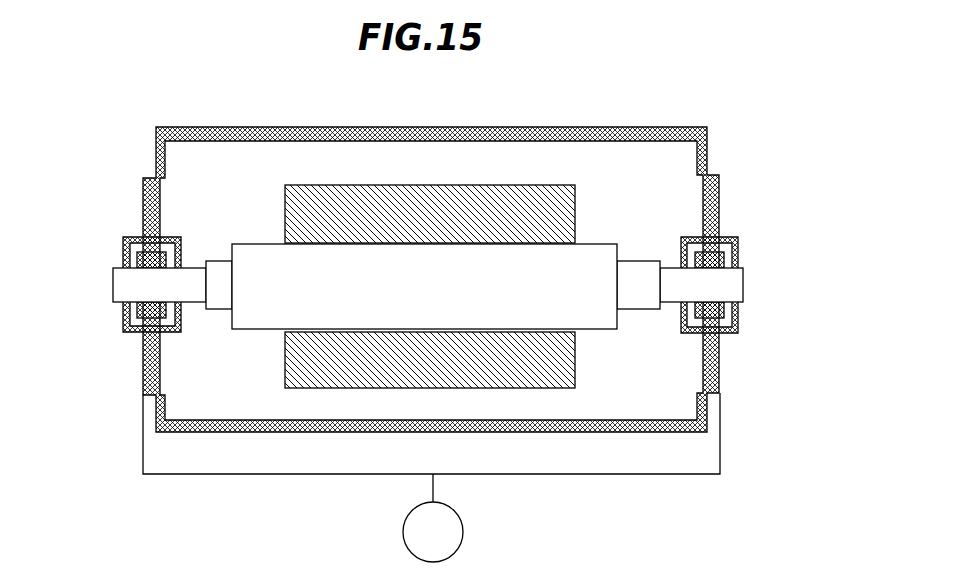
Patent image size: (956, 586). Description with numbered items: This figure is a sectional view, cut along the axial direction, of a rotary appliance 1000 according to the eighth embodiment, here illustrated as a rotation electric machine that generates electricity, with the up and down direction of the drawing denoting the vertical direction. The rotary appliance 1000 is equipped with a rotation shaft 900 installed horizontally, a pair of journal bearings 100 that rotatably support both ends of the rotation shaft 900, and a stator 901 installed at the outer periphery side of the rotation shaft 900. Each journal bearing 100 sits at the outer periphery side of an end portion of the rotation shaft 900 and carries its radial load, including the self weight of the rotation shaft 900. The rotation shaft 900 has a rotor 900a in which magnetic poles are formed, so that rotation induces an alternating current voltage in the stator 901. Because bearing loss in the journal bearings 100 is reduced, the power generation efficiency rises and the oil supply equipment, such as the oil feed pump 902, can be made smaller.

The rotary appliance 1000 is at (712, 95).
The journal bearing 100 is at (125, 240).
The rotation shaft 900 is at (463, 260).
The rotor 900a is at (578, 265).
The stator 901 is at (543, 206).
The oil feed pump 902 is at (463, 530).